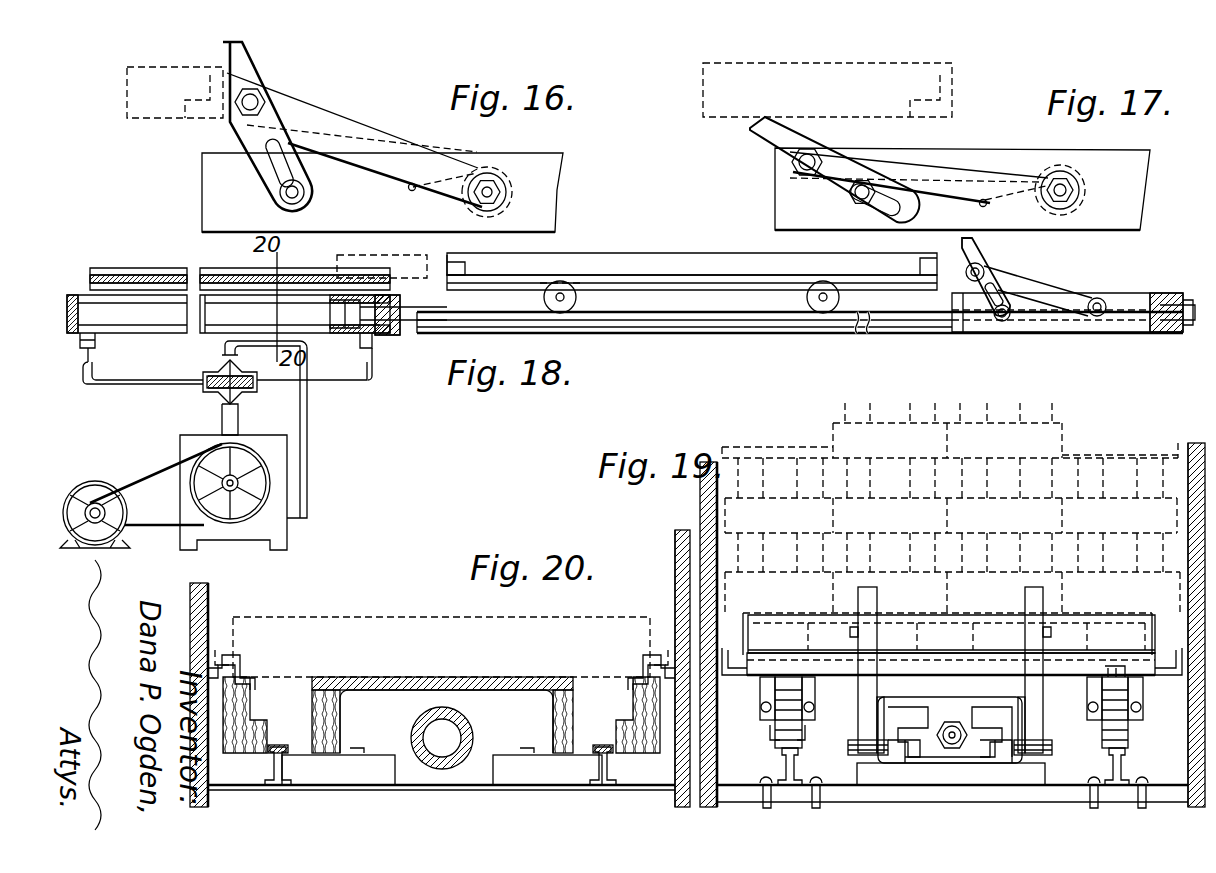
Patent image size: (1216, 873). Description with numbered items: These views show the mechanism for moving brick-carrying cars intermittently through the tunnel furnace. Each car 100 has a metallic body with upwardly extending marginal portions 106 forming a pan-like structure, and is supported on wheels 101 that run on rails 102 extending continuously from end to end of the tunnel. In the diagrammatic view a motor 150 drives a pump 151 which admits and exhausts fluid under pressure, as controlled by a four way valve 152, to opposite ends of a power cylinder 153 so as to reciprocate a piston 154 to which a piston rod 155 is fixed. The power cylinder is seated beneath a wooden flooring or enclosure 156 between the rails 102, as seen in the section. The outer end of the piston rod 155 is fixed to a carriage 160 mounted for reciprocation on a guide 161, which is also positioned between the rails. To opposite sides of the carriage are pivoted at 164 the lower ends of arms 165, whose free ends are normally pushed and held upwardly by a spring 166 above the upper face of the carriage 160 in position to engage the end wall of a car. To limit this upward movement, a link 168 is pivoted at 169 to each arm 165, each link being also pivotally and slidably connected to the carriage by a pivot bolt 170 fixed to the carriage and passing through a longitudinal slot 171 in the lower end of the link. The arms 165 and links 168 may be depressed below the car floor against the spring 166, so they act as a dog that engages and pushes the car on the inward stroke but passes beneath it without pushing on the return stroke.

In FIG. 16, the car 100 is at (127, 101).
In FIG. 17, the car 100 is at (703, 107).
In FIG. 18, the car 100 is at (657, 256).
In FIG. 19, the car 100 is at (790, 645).
In FIG. 20, the car 100 is at (365, 616).
In FIG. 18, the wheels 101 is at (580, 298).
In FIG. 19, the wheels 101 is at (775, 728).
In FIG. 18, the rails 102 is at (718, 338).
In FIG. 19, the rails 102 is at (786, 768).
In FIG. 20, the rails 102 is at (286, 770).
In FIG. 19, the upwardly extending marginal portions 106 is at (738, 625).
In FIG. 18, the motor 150 is at (96, 481).
In FIG. 18, the pump 151 is at (190, 422).
In FIG. 18, the four way valve 152 is at (205, 365).
In FIG. 18, the power cylinder 153 is at (88, 296).
In FIG. 20, the power cylinder 153 is at (462, 724).
In FIG. 18, the piston 154 is at (338, 334).
In FIG. 18, the piston rod 155 is at (863, 335).
In FIG. 18, the wooden flooring or enclosure 156 is at (150, 259).
In FIG. 20, the wooden flooring or enclosure 156 is at (387, 677).
In FIG. 16, the carriage 160 is at (550, 182).
In FIG. 17, the carriage 160 is at (1125, 205).
In FIG. 18, the carriage 160 is at (1170, 293).
In FIG. 19, the carriage 160 is at (945, 697).
In FIG. 19, the guide 161 is at (900, 770).
In FIG. 19, the pivot 164 is at (848, 745).
In FIG. 16, the arms 165 is at (362, 131).
In FIG. 17, the arms 165 is at (965, 168).
In FIG. 18, the arms 165 is at (1040, 284).
In FIG. 19, the arms 165 is at (874, 713).
In FIG. 16, the spring 166 is at (412, 191).
In FIG. 17, the spring 166 is at (983, 207).
In FIG. 18, the spring 166 is at (1105, 300).
In FIG. 16, the link 168 is at (233, 61).
In FIG. 17, the link 168 is at (765, 140).
In FIG. 18, the link 168 is at (978, 247).
In FIG. 19, the link 168 is at (862, 697).
In FIG. 16, the pivot 169 is at (262, 98).
In FIG. 17, the pivot 169 is at (783, 173).
In FIG. 18, the pivot 169 is at (968, 278).
In FIG. 16, the pivot bolt 170 is at (311, 192).
In FIG. 17, the pivot bolt 170 is at (870, 181).
In FIG. 18, the pivot bolt 170 is at (1010, 318).
In FIG. 16, the slot 171 is at (281, 168).
In FIG. 17, the slot 171 is at (878, 203).
In FIG. 18, the slot 171 is at (992, 310).